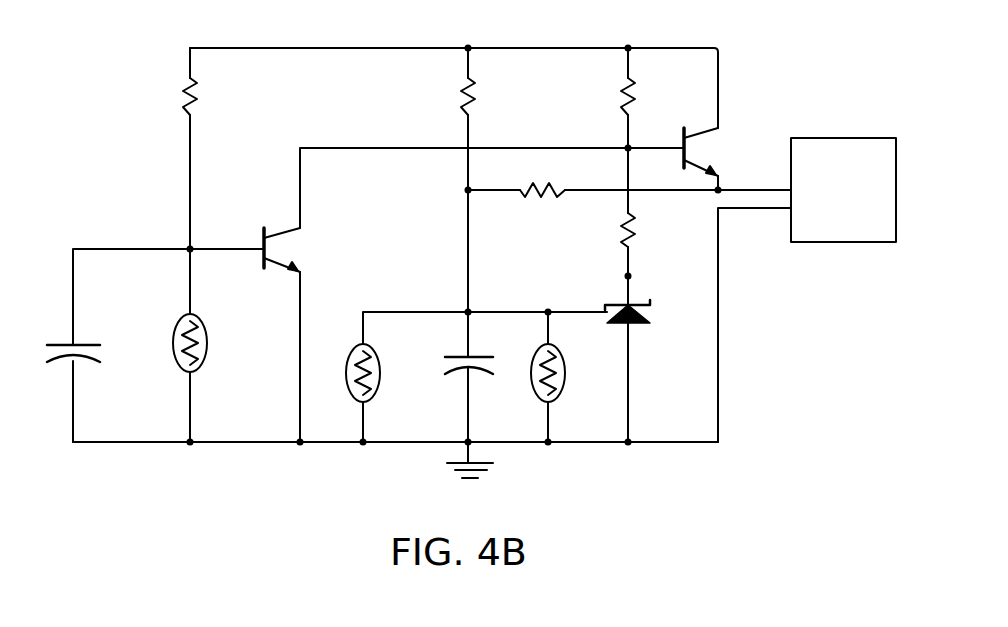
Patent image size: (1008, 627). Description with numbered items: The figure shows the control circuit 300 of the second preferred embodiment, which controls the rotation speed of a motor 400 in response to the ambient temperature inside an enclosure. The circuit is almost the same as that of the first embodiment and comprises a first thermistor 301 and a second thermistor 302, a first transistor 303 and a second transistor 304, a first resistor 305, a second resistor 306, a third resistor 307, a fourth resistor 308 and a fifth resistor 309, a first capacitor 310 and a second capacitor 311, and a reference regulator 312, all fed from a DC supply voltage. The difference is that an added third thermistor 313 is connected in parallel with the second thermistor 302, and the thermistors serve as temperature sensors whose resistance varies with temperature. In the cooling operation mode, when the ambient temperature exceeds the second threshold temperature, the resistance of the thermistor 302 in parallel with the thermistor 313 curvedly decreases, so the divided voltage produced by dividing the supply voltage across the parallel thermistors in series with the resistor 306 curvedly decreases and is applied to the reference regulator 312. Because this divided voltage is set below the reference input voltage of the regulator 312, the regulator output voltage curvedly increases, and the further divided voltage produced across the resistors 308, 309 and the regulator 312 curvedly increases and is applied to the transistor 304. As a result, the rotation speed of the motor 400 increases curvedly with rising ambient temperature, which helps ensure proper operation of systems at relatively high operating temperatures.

The control circuit 300 is at (795, 29).
The thermistor TR1 301 is at (176, 330).
The thermistor TR2 302 is at (348, 370).
The transistor SW1 303 is at (286, 232).
The transistor SW2 304 is at (706, 128).
The resistor R1 305 is at (181, 89).
The resistor R2 306 is at (460, 86).
The resistor R3 307 is at (541, 184).
The resistor R4 308 is at (619, 88).
The resistor R5 309 is at (621, 217).
The capacitor C1 310 is at (81, 358).
The capacitor C2 311 is at (480, 356).
The reference regulator VR 312 is at (652, 306).
The thermistor TR3 313 is at (560, 398).
The motor 400 is at (813, 138).